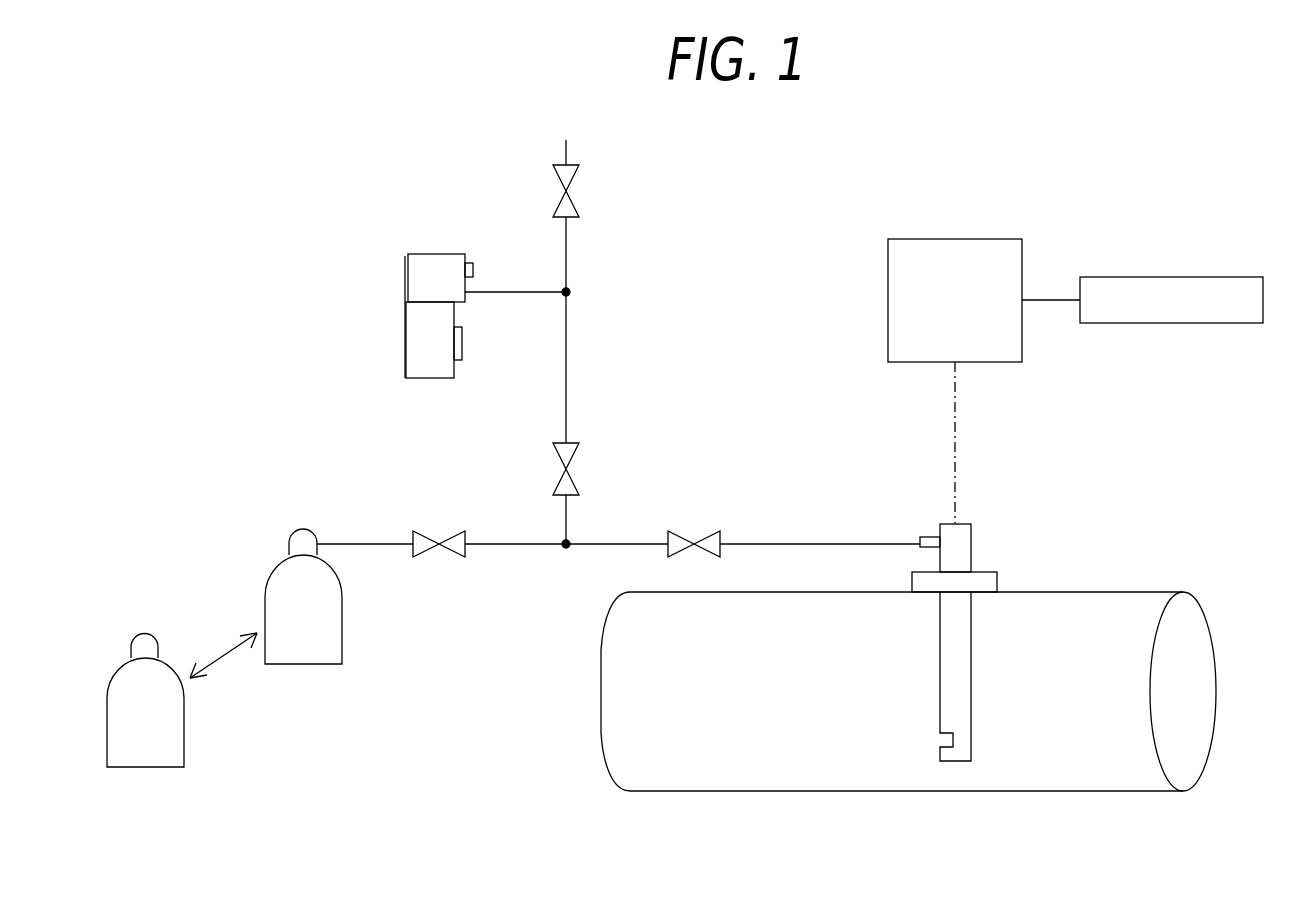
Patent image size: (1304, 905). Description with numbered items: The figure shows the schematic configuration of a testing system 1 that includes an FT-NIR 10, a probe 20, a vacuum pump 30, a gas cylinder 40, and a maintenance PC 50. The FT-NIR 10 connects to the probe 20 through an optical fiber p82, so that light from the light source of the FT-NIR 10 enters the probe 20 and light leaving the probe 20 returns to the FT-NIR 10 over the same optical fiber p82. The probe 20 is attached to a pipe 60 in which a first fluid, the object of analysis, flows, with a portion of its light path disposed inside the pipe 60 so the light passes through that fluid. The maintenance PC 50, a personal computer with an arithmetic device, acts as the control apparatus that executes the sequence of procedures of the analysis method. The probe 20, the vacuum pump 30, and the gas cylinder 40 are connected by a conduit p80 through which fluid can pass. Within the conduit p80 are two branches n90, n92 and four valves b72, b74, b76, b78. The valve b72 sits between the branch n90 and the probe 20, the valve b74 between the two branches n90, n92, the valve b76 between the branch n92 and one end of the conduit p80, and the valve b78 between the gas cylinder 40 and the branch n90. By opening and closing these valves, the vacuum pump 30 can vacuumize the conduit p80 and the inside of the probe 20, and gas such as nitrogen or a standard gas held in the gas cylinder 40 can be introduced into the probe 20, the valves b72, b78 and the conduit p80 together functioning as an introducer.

The testing system 1 is at (320, 188).
The FT-NIR 10 is at (967, 238).
The probe 20 is at (972, 540).
The vacuum pump 30 is at (412, 379).
The gas cylinder 40 is at (303, 665).
The maintenance PC 50 is at (1205, 276).
The pipe 60 is at (828, 792).
The valve b72 is at (686, 531).
The valve b74 is at (569, 466).
The valve b76 is at (571, 196).
The valve b78 is at (431, 531).
The branch n90 is at (565, 550).
The branch n92 is at (571, 292).
The conduit p80 is at (567, 357).
The optical fiber p82 is at (956, 440).